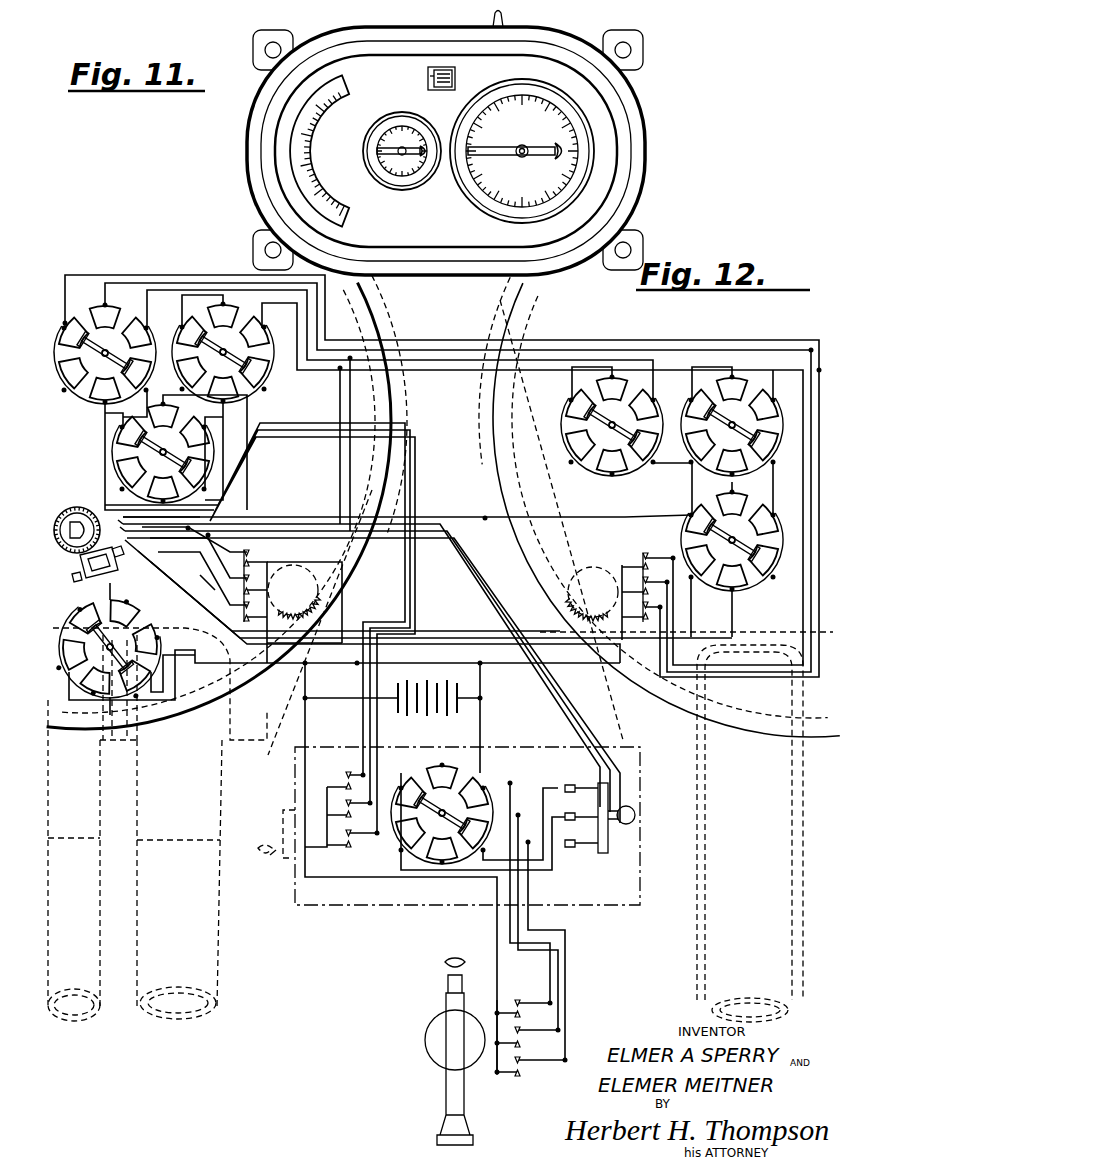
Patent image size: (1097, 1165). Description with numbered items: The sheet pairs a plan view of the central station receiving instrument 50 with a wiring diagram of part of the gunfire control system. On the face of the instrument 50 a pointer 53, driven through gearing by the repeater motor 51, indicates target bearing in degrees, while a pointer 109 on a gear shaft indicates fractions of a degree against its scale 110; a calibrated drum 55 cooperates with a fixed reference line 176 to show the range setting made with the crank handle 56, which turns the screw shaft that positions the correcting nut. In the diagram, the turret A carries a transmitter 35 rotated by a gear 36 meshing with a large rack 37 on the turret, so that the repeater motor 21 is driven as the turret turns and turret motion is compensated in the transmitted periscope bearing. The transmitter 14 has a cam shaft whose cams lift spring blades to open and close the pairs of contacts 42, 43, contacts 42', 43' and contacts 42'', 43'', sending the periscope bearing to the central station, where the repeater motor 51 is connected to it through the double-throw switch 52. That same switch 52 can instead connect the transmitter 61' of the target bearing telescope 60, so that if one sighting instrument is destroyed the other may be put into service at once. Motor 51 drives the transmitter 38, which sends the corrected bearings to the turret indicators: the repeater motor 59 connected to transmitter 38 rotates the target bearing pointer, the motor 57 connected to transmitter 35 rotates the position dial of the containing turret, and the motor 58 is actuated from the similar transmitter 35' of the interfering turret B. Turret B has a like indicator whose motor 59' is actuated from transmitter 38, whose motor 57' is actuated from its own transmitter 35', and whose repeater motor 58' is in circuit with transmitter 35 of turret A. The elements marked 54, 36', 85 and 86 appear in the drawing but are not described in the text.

In FIG. 11, the central station receiving instrument 50 is at (646, 151).
In FIG. 12, the central station receiving instrument 50 is at (467, 839).
In FIG. 11, the pointer 53 is at (522, 151).
In FIG. 11, the arc scale 54 is at (309, 158).
In FIG. 11, the calibrated drum 55 is at (441, 69).
In FIG. 11, the crank handle 56 is at (509, 16).
In FIG. 12, the crank handle 56 is at (265, 866).
In FIG. 11, the pointer 109 is at (402, 151).
In FIG. 11, the scale 110 is at (378, 141).
In FIG. 11, the fixed reference line 176 is at (428, 78).
In FIG. 12, the transmitter 14 is at (92, 500).
In FIG. 12, the repeater motor 21 is at (66, 662).
In FIG. 12, the transmitter 35 is at (258, 578).
In FIG. 12, the transmitter 35' is at (641, 576).
In FIG. 12, the gear 36 is at (294, 576).
In FIG. 12, the gear 36' is at (592, 594).
In FIG. 12, the rack 37 is at (304, 630).
In FIG. 12, the transmitter 38 is at (346, 774).
In FIG. 12, the contact 42 is at (435, 594).
In FIG. 12, the contact 42' is at (340, 585).
In FIG. 12, the contact 42'' is at (161, 502).
In FIG. 12, the contact 43 is at (202, 573).
In FIG. 12, the contact 43' is at (198, 552).
In FIG. 12, the contact 43'' is at (192, 531).
In FIG. 12, the repeater motor 51 is at (442, 814).
In FIG. 12, the double-throw switch 52 is at (578, 843).
In FIG. 12, the repeater motor 57 is at (223, 353).
In FIG. 12, the repeater motor 57' is at (732, 426).
In FIG. 12, the repeater motor 58 is at (105, 354).
In FIG. 12, the repeater motor 58' is at (612, 426).
In FIG. 12, the repeater motor 59 is at (163, 453).
In FIG. 12, the repeater motor 59' is at (732, 541).
In FIG. 12, the target bearing telescope 60 is at (447, 1004).
In FIG. 12, the transmitter 61' is at (520, 1037).
In FIG. 12, the conductor 85 is at (385, 612).
In FIG. 12, the conductor 86 is at (211, 579).
In FIG. 12, the turret A is at (395, 412).
In FIG. 12, the interfering turret B is at (497, 433).